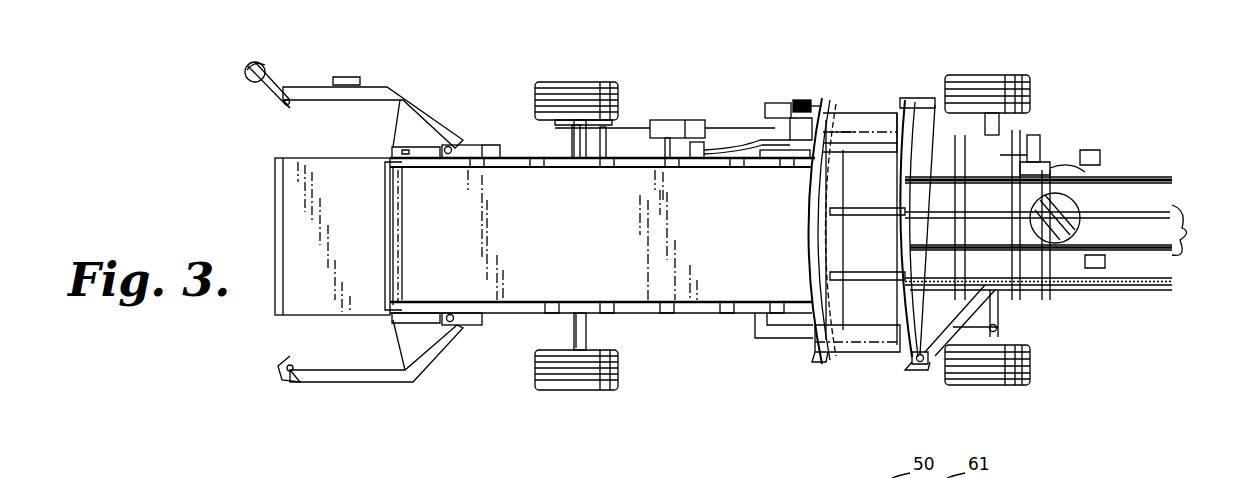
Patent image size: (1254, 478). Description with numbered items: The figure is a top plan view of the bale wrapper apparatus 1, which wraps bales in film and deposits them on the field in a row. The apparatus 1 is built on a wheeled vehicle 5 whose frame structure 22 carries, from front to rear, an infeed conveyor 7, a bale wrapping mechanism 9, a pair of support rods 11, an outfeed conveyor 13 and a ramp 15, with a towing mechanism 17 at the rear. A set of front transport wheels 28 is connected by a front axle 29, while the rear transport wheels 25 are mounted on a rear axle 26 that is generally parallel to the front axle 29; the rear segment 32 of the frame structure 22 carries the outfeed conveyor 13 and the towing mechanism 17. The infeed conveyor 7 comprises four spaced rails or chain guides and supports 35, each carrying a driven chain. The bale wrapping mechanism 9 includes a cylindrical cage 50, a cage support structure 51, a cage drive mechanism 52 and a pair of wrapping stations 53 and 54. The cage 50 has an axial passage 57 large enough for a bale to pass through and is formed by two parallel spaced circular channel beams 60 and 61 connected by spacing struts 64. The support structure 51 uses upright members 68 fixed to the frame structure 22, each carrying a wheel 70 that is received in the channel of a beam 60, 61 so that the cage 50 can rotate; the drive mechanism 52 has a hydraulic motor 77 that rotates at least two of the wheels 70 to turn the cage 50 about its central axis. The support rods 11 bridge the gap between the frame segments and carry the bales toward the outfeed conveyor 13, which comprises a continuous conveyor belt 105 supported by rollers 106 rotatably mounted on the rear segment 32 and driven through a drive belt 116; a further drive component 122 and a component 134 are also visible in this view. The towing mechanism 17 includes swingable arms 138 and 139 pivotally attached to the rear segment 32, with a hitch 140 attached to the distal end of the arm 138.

The bale wrapper apparatus 1 is at (720, 373).
The wheeled vehicle 5 is at (515, 318).
The infeed conveyor 7 is at (1088, 290).
The bale wrapping mechanism 9 is at (812, 206).
The support rods 11 is at (876, 210).
The outfeed conveyor 13 is at (597, 243).
The ramp 15 is at (318, 247).
The towing mechanism 17 is at (253, 82).
The frame structure 22 is at (690, 315).
The rear transport wheels 25 is at (598, 86).
The rear axle 26 is at (574, 326).
The front transport wheels 28 is at (1030, 98).
The front axle 29 is at (1002, 313).
The rear segment 32 is at (486, 158).
The chain guides and supports 35 is at (1062, 215).
The cage 50 is at (896, 100).
The cage support structure 51 is at (928, 372).
The cage drive mechanism 52 is at (800, 100).
The wrapping station 53 is at (840, 112).
The wrapping station 54 is at (860, 360).
The axial passage 57 is at (795, 232).
The circular channel beam 60 is at (810, 271).
The circular channel beam 61 is at (895, 177).
The spacing struts 64 is at (847, 140).
The upright members 68 is at (936, 360).
The wheels 70 is at (916, 365).
The hydraulic motor 77 is at (782, 100).
The conveyor belt 105 is at (666, 242).
The rollers 106 is at (612, 318).
The drive belt 116 is at (748, 130).
The drive motor 122 is at (635, 124).
The hopper frame 134 is at (400, 254).
The swingable arm 138 is at (352, 100).
The swingable arm 139 is at (362, 385).
The hitch 140 is at (275, 72).